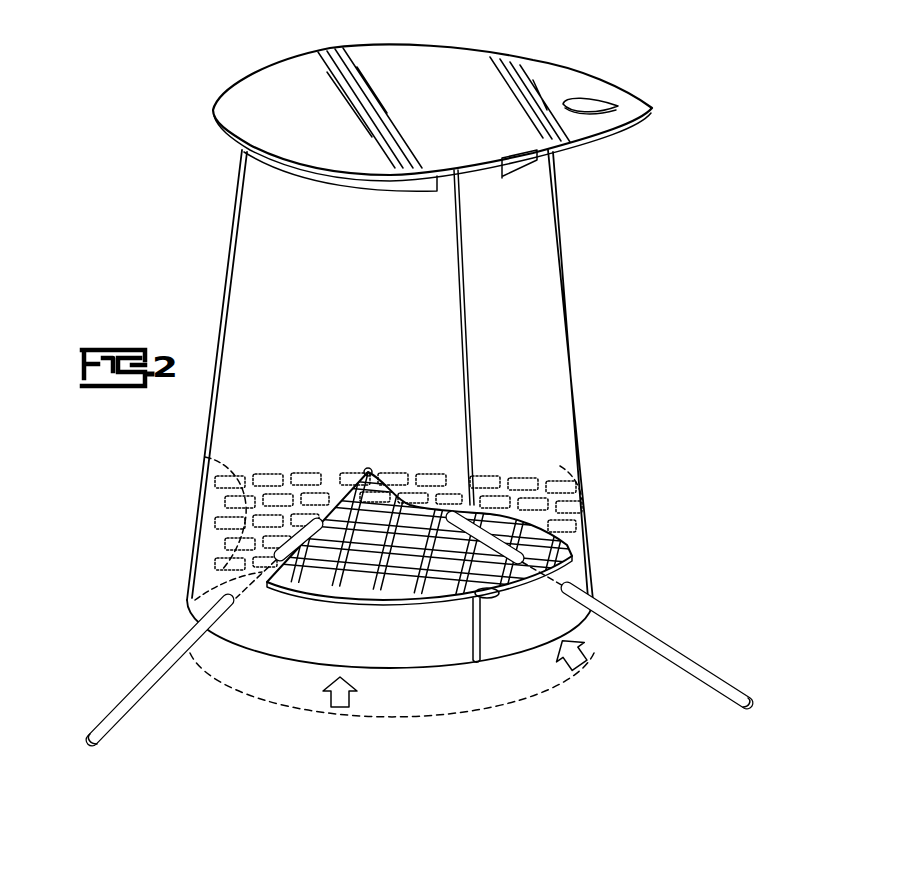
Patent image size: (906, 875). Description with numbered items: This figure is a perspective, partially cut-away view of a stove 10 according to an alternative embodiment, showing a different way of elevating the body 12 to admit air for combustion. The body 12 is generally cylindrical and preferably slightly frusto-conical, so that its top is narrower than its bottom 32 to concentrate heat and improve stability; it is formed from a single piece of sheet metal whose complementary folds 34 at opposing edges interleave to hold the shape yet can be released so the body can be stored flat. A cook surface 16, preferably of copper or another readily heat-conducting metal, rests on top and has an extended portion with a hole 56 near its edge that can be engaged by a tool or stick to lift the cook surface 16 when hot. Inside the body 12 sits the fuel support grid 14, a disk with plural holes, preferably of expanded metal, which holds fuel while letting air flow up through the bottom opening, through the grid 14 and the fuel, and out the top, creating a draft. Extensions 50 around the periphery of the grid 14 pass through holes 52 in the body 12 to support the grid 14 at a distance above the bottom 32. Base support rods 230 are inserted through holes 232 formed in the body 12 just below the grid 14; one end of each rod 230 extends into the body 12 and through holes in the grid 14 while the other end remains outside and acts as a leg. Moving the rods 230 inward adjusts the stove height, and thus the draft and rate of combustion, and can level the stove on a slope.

The stove 10 is at (181, 275).
The body 12 is at (533, 341).
The fuel support grid 14 is at (577, 541).
The cook surface 16 is at (449, 72).
The bottom 32 is at (590, 620).
The fold 34 is at (465, 243).
The extensions 50 is at (207, 458).
The holes 52 is at (202, 510).
The hole 56 is at (584, 108).
The base support rods 230 is at (181, 657).
The holes 232 is at (234, 614).